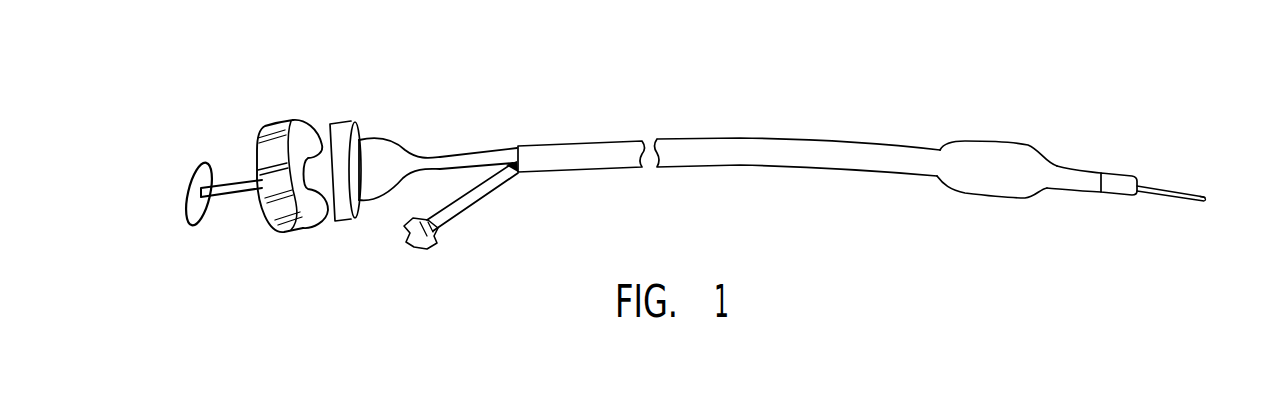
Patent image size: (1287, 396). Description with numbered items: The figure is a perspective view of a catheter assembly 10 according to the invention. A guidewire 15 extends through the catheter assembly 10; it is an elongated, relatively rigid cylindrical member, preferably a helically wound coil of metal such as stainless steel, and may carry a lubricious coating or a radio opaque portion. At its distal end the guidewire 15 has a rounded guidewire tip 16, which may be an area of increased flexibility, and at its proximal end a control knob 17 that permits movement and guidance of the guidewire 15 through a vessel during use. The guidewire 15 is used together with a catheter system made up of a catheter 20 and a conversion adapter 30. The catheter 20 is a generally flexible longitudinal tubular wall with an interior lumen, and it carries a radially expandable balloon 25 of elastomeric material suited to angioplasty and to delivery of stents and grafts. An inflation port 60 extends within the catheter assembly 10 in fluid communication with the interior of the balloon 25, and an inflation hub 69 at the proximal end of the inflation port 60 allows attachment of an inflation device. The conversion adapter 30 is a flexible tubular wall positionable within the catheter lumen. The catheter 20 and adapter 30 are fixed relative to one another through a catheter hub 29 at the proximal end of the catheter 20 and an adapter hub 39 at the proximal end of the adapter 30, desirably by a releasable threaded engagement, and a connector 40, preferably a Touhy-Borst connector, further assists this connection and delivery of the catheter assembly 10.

The catheter assembly 10 is at (572, 83).
The guidewire 15 is at (230, 183).
The guidewire tip 16 is at (1206, 199).
The control knob 17 is at (195, 175).
The catheter 20 is at (760, 152).
The balloon 25 is at (963, 152).
The catheter hub 29 is at (379, 150).
The conversion adapter 30 is at (1118, 180).
The adapter hub 39 is at (358, 125).
The connector 40 is at (279, 130).
The inflation port 60 is at (469, 203).
The inflation hub 69 is at (424, 243).